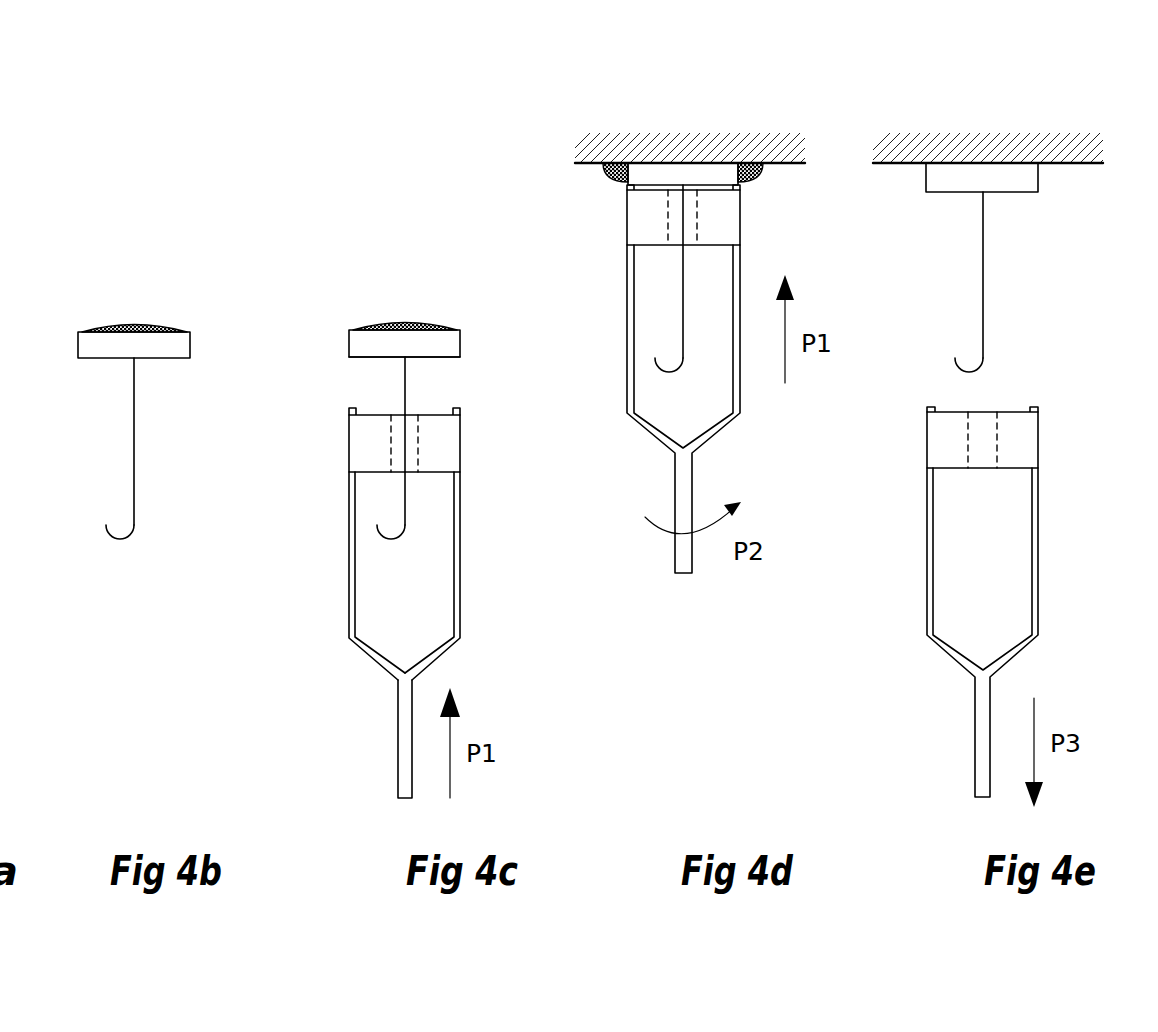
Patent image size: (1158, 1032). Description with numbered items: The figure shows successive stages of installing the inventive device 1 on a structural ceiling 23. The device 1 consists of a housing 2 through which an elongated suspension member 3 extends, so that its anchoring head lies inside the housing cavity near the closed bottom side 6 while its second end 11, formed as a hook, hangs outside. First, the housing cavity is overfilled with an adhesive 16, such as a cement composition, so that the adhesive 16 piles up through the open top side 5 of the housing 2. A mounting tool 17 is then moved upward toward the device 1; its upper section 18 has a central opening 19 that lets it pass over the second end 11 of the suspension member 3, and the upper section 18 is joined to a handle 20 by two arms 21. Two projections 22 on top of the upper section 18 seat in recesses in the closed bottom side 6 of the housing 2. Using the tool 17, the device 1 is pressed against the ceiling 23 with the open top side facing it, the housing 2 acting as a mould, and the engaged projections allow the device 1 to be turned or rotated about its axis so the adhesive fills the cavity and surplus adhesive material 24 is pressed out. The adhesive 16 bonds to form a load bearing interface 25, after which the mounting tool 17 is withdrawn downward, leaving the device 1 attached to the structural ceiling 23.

In FIG. 4c, the inventive device 1 is at (383, 255).
In FIG. 4d, the inventive device 1 is at (596, 192).
In FIG. 4e, the inventive device 1 is at (1015, 228).
In FIG. 4b, the housing 2 is at (78, 340).
In FIG. 4c, the housing 2 is at (365, 342).
In FIG. 4d, the housing 2 is at (670, 177).
In FIG. 4c, the elongated suspension member 3 is at (405, 377).
In FIG. 4b, the open top side 5 is at (119, 292).
In FIG. 4c, the closed bottom side 6 is at (370, 372).
In FIG. 4c, the second end 11 is at (388, 560).
In FIG. 4b, the adhesive 16 is at (150, 325).
In FIG. 4c, the adhesive 16 is at (378, 330).
In FIG. 4c, the mounting tool 17 is at (310, 563).
In FIG. 4d, the mounting tool 17 is at (612, 333).
In FIG. 4e, the mounting tool 17 is at (890, 587).
In FIG. 4c, the upper section 18 is at (365, 443).
In FIG. 4d, the upper section 18 is at (718, 213).
In FIG. 4c, the central opening 19 is at (417, 433).
In FIG. 4c, the handle 20 is at (402, 707).
In FIG. 4c, the arms 21 is at (462, 564).
In FIG. 4c, the projections 22 is at (349, 412).
In FIG. 4d, the structural ceiling 23 is at (682, 142).
In FIG. 4e, the structural ceiling 23 is at (963, 145).
In FIG. 4d, the surplus adhesive material 24 is at (748, 168).
In FIG. 4d, the load bearing interface 25 is at (718, 158).
In FIG. 4e, the load bearing interface 25 is at (1017, 160).